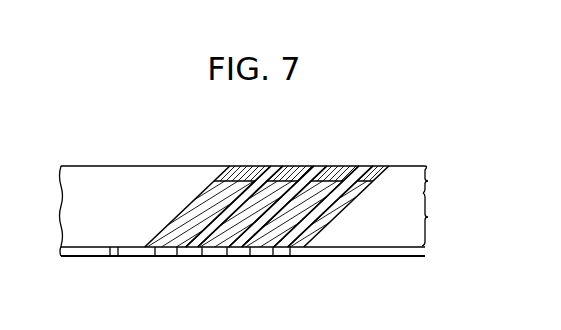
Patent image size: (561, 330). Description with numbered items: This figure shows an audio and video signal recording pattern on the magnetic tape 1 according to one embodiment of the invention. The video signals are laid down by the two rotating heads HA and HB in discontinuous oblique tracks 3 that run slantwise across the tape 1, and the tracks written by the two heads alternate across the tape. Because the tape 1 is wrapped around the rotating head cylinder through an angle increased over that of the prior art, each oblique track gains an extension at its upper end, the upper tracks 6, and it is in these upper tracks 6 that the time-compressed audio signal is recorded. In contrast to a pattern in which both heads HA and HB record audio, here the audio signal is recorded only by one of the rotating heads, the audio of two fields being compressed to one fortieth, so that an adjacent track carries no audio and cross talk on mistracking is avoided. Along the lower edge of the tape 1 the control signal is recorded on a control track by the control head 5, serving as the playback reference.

The magnetic tape 1 is at (130, 166).
The oblique tracks 3 is at (434, 219).
The control head 5 is at (117, 258).
The upper tracks 6 is at (434, 181).
The rotating head HA is at (260, 210).
The rotating head HB is at (279, 182).